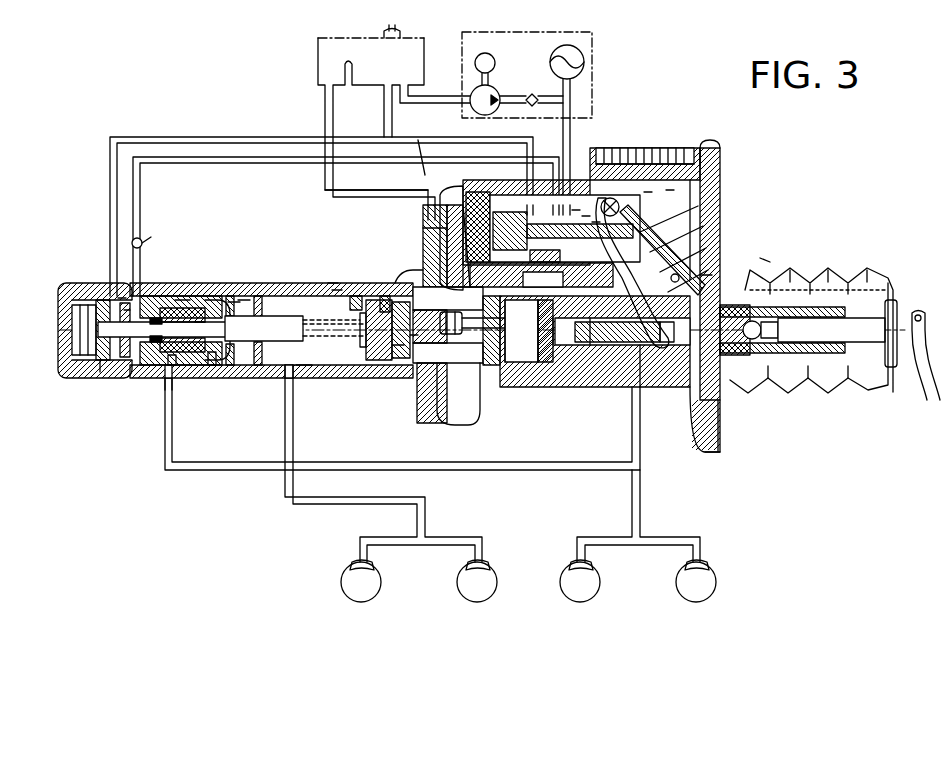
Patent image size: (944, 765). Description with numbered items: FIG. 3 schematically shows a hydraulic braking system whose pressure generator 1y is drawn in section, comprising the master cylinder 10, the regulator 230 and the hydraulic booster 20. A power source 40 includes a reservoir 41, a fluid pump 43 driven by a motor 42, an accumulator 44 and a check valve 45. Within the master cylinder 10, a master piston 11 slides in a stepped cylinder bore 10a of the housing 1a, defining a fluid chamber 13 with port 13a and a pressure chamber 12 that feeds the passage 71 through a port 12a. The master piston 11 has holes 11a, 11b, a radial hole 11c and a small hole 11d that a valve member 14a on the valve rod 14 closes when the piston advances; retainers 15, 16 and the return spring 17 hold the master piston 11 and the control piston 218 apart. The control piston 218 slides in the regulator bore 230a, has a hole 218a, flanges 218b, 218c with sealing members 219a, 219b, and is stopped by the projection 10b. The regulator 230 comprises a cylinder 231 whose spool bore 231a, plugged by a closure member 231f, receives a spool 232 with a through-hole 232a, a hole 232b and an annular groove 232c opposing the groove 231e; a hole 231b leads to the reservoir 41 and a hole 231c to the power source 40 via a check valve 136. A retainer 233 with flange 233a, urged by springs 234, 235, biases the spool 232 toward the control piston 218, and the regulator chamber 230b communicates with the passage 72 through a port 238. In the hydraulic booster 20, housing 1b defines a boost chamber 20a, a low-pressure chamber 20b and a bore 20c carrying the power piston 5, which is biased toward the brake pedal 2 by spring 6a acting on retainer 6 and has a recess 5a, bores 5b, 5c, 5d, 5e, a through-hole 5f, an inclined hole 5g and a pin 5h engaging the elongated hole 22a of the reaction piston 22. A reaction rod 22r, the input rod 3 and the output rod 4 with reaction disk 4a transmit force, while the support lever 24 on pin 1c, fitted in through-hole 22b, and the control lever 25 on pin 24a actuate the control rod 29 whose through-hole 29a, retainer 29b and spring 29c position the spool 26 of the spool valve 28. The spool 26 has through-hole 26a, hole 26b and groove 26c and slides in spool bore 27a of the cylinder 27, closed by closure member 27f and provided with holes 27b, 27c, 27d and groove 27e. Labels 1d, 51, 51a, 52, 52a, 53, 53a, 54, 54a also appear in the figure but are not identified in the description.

The housing 1a is at (403, 280).
The housing 1b is at (719, 148).
The pin 1c is at (712, 150).
The housing portion 1d is at (711, 453).
The pressure generator 1y is at (762, 258).
The brake pedal 2 is at (927, 386).
The input rod 3 is at (872, 342).
The output rod 4 is at (502, 346).
The elastic reaction disk 4a is at (525, 352).
The power piston 5 is at (632, 346).
The recess 5a is at (540, 352).
The small-diameter bore 5b is at (556, 357).
The intermediate-diameter bore 5c is at (576, 350).
The large-diameter bore 5d is at (643, 367).
The open end bore 5e is at (800, 344).
The through-hole 5f is at (723, 382).
The inclined hole 5g is at (603, 277).
The pin 5h is at (615, 303).
The retainer 6 is at (860, 374).
The spring 6a is at (837, 378).
The master cylinder 10 is at (323, 245).
The cylinder bore 10a is at (336, 292).
The projection 10b is at (333, 285).
The master piston 11 is at (453, 372).
The hole 11a is at (381, 357).
The hole 11b is at (466, 372).
The hole 11c is at (420, 365).
The small hole 11d is at (393, 352).
The pressure chamber 12 is at (325, 350).
The port 12a is at (303, 368).
The fluid chamber 13 is at (418, 282).
The port 13a is at (428, 258).
The valve rod 14 is at (350, 326).
The valve member 14a is at (364, 348).
The retainer 15 is at (384, 298).
The retainer 16 is at (304, 319).
The return spring 17 is at (359, 297).
The hydraulic booster 20 is at (746, 163).
The boost chamber 20a is at (718, 172).
The low-pressure chamber 20b is at (427, 233).
The bore 20c is at (589, 357).
The reaction piston 22 is at (625, 348).
The elongated hole 22a is at (660, 348).
The through-hole 22b is at (693, 427).
The reaction rod 22r is at (598, 346).
The support lever 24 is at (716, 252).
The pin 24a is at (706, 265).
The control lever 25 is at (706, 275).
The spool 26 is at (527, 208).
The through-hole 26a is at (596, 222).
The hole 26b is at (586, 216).
The annular groove 26c is at (577, 210).
The cylinder 27 is at (497, 210).
The spool bore 27a is at (462, 213).
The hole 27b is at (534, 205).
The hole 27c is at (557, 203).
The hole 27d is at (426, 219).
The annular groove 27e is at (592, 205).
The closure member 27f is at (430, 195).
The spool valve 28 is at (432, 193).
The control rod 29 is at (708, 232).
The through-hole 29a is at (712, 200).
The retainer 29b is at (670, 190).
The spring 29c is at (648, 192).
The power source 40 is at (597, 38).
The reservoir 41 is at (317, 61).
The motor 42 is at (492, 50).
The fluid pump 43 is at (496, 89).
The accumulator 44 is at (556, 50).
The check valve 45 is at (532, 93).
The wheel brake 51 is at (383, 582).
The wheel cylinder 51a is at (374, 560).
The wheel brake 52 is at (499, 582).
The wheel cylinder 52a is at (486, 560).
The wheel brake 53 is at (602, 582).
The wheel cylinder 53a is at (590, 560).
The wheel brake 54 is at (718, 582).
The wheel cylinder 54a is at (702, 560).
The passage 71 is at (294, 447).
The passage 72 is at (176, 447).
The check valve 136 is at (146, 236).
The control piston 218 is at (258, 298).
The hole 218a is at (282, 380).
The flange 218b is at (246, 300).
The flange 218c is at (234, 302).
The sealing member 219a is at (229, 358).
The sealing member 219b is at (224, 362).
The regulator 230 is at (187, 300).
The regulator bore 230a is at (226, 300).
The regulator chamber 230b is at (182, 300).
The cylinder 231 is at (88, 357).
The spool bore 231a is at (110, 362).
The hole 231b is at (127, 310).
The hole 231c is at (122, 300).
The annular groove 231e is at (128, 358).
The closure member 231f is at (102, 362).
The spool 232 is at (103, 285).
The through-hole 232a is at (125, 362).
The hole 232b is at (163, 336).
The annular groove 232c is at (162, 318).
The retainer 233 is at (200, 306).
The flange 233a is at (204, 308).
The spring 234 is at (172, 348).
The spring 235 is at (212, 350).
The port 238 is at (170, 378).